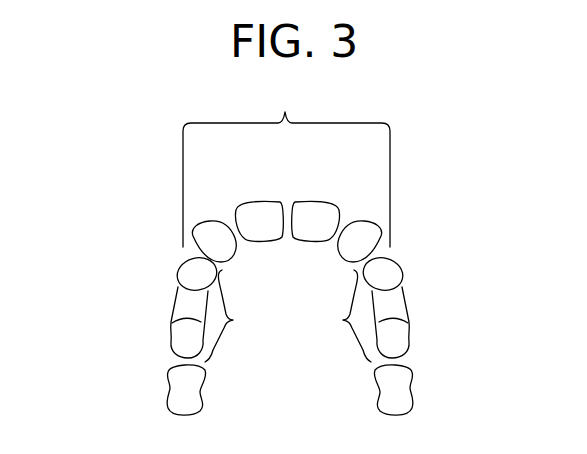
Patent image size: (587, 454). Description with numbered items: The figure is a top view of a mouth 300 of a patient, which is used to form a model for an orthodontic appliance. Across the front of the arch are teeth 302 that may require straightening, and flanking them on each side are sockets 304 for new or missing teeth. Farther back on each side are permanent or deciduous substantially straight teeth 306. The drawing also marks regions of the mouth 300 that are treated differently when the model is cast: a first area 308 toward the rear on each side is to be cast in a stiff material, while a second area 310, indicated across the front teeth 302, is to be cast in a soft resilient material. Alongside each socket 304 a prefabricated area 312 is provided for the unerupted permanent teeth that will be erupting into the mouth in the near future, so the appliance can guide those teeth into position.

The mouth 300 is at (126, 80).
The teeth 302 is at (350, 224).
The sockets 304 is at (177, 300).
The substantially straight teeth 306 is at (178, 385).
The first area 308 is at (351, 388).
The second area 310 is at (286, 166).
The prefabricated area 312 is at (326, 316).